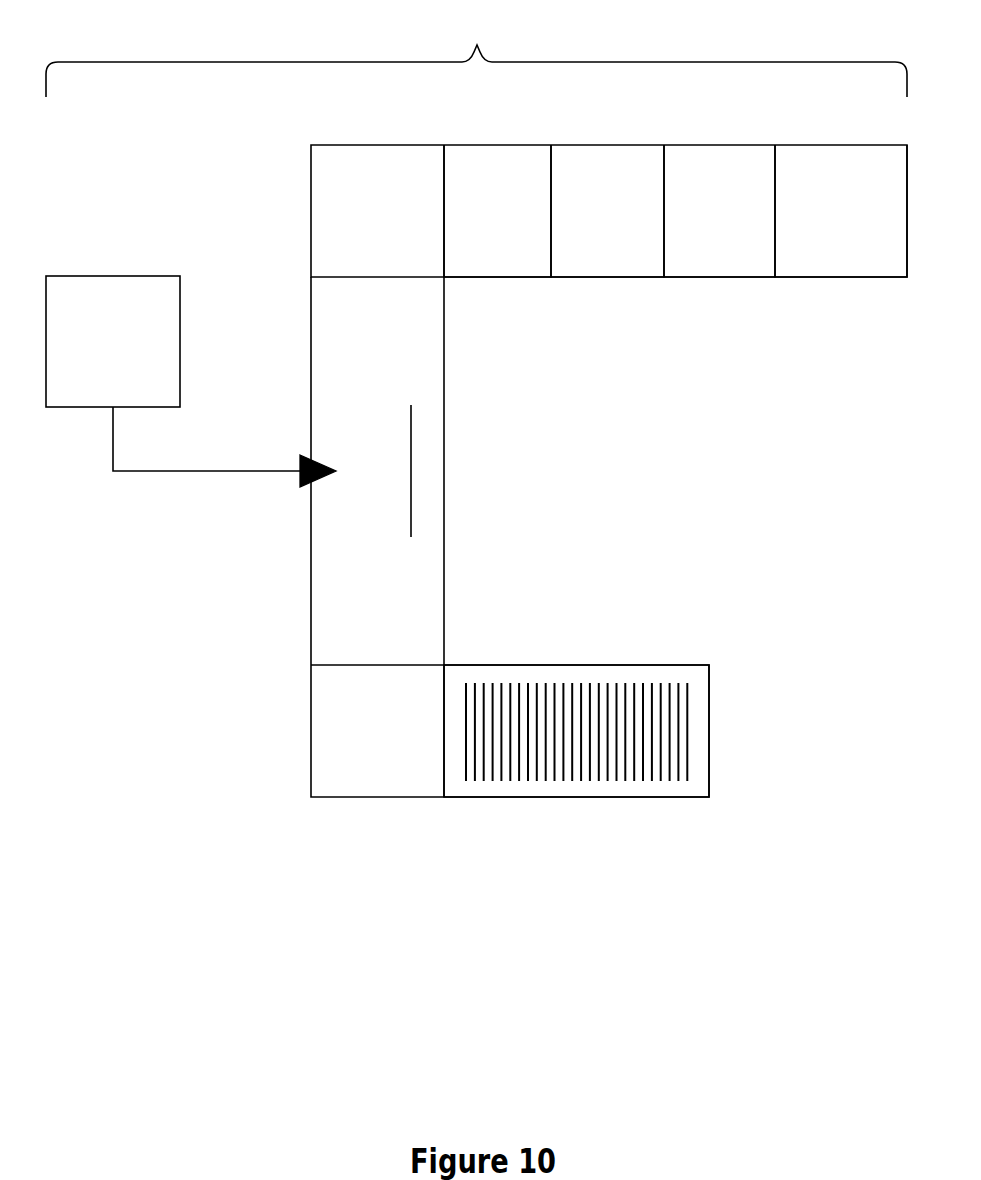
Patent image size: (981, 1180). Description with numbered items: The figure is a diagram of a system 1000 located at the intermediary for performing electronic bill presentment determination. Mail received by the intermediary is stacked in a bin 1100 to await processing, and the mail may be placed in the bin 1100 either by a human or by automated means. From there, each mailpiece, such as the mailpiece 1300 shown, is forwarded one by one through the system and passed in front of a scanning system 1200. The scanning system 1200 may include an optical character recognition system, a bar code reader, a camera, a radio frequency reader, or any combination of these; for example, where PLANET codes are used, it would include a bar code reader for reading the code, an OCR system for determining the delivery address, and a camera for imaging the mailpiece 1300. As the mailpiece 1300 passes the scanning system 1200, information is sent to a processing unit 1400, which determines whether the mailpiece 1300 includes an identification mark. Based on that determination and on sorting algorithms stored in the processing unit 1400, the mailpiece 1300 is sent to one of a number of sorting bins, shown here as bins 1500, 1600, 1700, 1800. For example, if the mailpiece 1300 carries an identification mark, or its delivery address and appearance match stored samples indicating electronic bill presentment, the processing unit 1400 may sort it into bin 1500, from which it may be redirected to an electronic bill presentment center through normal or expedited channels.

The system 1000 is at (476, 405).
The bin 1100 is at (577, 797).
The scanning system 1200 is at (280, 471).
The mailpiece 1300 is at (411, 471).
The processing unit 1400 is at (113, 341).
The bin 1500 is at (497, 211).
The sorting bin 1600 is at (607, 211).
The sorting bin 1700 is at (719, 211).
The sorting bin 1800 is at (841, 211).